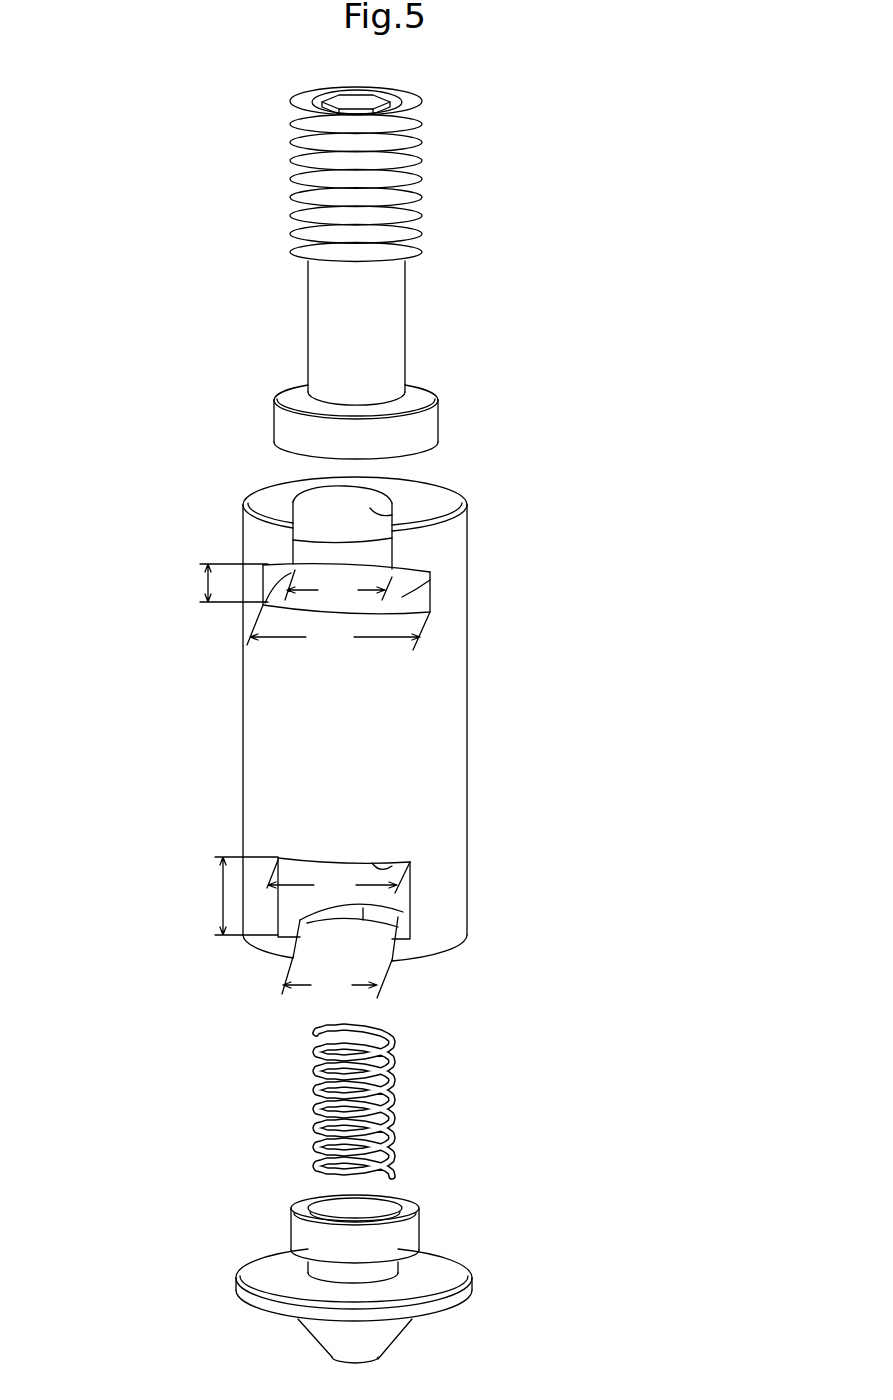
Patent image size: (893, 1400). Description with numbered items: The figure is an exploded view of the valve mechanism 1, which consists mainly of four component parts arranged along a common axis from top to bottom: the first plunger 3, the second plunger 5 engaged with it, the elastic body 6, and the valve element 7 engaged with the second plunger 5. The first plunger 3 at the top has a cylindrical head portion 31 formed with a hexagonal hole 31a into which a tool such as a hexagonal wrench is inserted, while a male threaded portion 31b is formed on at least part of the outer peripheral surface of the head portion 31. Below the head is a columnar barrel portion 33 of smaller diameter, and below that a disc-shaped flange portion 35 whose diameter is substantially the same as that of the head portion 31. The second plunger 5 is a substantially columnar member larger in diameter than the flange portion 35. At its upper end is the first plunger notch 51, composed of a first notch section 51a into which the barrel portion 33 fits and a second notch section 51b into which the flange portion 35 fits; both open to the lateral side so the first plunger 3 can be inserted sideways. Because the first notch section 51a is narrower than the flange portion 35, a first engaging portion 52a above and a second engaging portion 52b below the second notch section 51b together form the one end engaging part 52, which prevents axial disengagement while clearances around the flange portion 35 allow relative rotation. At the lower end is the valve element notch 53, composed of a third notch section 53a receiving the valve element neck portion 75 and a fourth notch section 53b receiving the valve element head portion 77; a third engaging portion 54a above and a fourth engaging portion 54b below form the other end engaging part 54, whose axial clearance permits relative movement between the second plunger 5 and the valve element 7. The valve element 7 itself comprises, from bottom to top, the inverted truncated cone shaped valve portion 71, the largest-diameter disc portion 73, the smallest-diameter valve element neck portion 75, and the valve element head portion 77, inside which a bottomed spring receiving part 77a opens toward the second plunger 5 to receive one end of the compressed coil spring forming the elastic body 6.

The valve mechanism 1 is at (176, 131).
The first plunger 3 is at (437, 262).
The head portion 31 is at (418, 141).
The hexagonal hole 31a is at (353, 96).
The male threaded portion 31b is at (410, 186).
The barrel portion 33 is at (388, 326).
The flange portion 35 is at (426, 428).
The second plunger 5 is at (488, 695).
The first plunger notch 51 is at (540, 485).
The first notch section 51a is at (392, 513).
The second notch section 51b is at (402, 597).
The one end engaging part 52 is at (85, 505).
The first engaging portion 52a is at (282, 549).
The second engaging portion 52b is at (282, 627).
The valve element notch 53 is at (537, 815).
The third notch section 53a is at (405, 925).
The fourth notch section 53b is at (407, 862).
The other end engaging part 54 is at (85, 835).
The third engaging portion 54a is at (317, 852).
The fourth engaging portion 54b is at (283, 947).
The elastic body 6 is at (407, 1106).
The valve element 7 is at (474, 1239).
The valve portion 71 is at (383, 1337).
The disc portion 73 is at (462, 1293).
The valve element neck portion 75 is at (325, 1271).
The valve element head portion 77 is at (303, 1240).
The spring receiving part 77a is at (325, 1208).